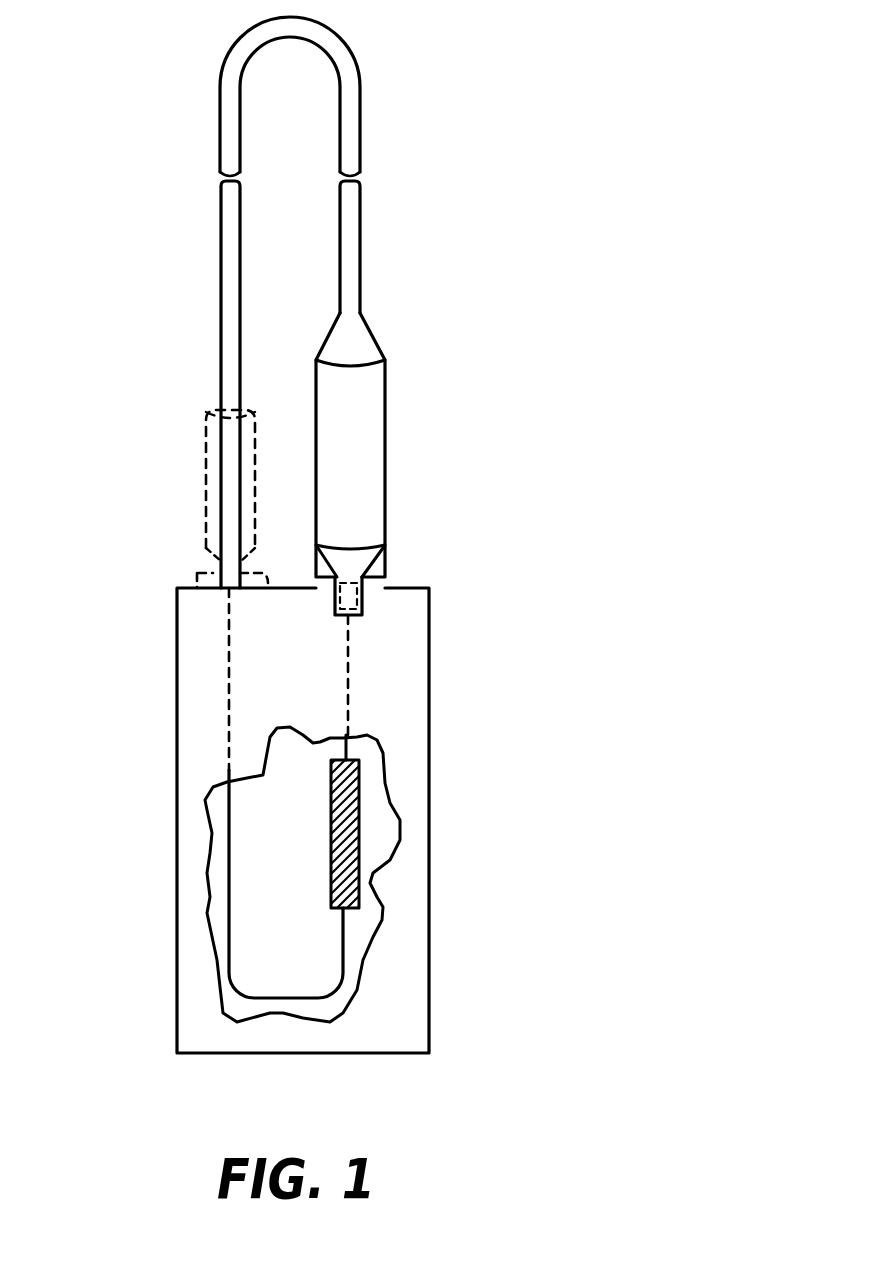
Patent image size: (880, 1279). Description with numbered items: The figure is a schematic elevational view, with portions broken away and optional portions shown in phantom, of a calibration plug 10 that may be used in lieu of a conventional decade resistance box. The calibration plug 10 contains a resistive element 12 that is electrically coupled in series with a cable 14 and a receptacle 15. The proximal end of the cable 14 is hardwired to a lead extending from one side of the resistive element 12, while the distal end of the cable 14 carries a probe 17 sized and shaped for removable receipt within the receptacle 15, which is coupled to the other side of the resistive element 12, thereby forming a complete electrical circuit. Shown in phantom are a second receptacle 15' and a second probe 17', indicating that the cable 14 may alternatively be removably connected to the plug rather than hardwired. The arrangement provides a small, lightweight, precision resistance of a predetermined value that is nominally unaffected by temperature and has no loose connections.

The calibration plug 10 is at (429, 937).
The resistive element 12 is at (358, 798).
The cable 14 is at (221, 252).
The receptacle 15 is at (442, 650).
The second receptacle 15' is at (151, 567).
The probe 17 is at (433, 379).
The second probe 17' is at (145, 486).